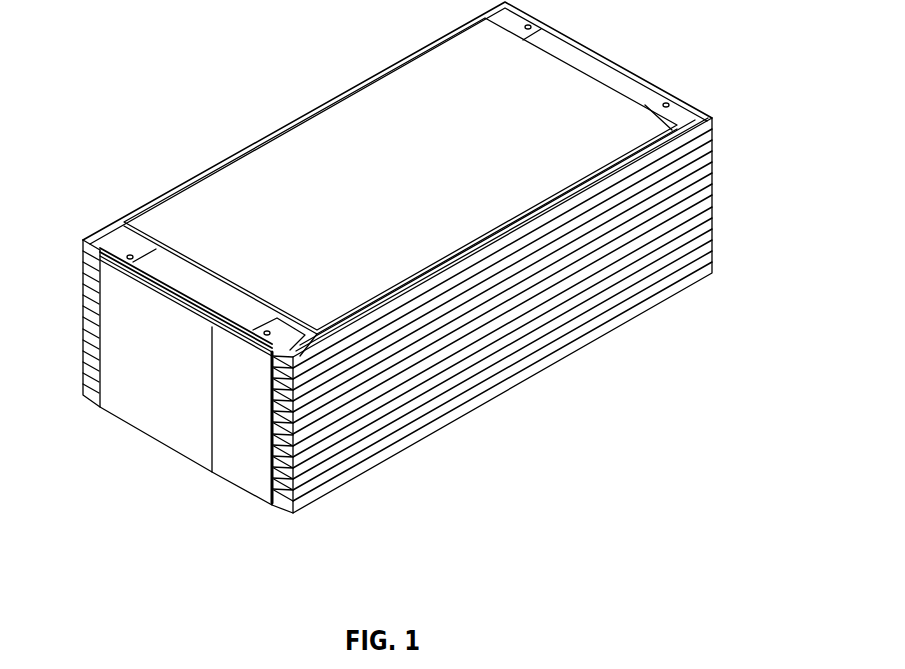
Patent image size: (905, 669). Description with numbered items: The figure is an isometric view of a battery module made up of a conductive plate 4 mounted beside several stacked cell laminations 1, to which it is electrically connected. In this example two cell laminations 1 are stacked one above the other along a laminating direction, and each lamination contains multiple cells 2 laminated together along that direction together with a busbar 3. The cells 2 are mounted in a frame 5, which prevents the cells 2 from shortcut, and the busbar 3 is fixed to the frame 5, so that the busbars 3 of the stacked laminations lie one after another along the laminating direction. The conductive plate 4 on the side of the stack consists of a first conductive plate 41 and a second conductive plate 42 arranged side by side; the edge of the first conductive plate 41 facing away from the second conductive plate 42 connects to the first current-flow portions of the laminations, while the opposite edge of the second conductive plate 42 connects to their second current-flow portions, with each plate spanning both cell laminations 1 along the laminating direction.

The cell laminations 1 is at (257, 137).
The cells 2 is at (210, 212).
The busbar 3 is at (180, 306).
The conductive plate 4 is at (149, 398).
The first conductive plate 41 is at (168, 412).
The second conductive plate 42 is at (247, 470).
The frame 5 is at (357, 330).